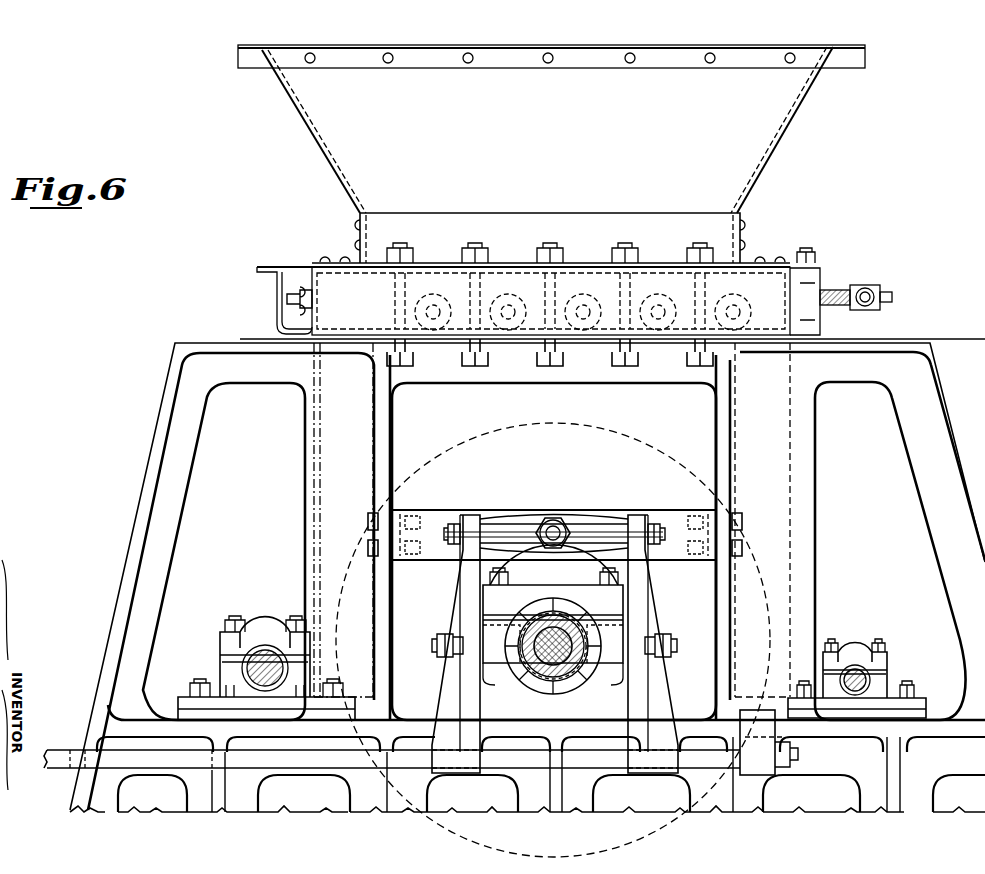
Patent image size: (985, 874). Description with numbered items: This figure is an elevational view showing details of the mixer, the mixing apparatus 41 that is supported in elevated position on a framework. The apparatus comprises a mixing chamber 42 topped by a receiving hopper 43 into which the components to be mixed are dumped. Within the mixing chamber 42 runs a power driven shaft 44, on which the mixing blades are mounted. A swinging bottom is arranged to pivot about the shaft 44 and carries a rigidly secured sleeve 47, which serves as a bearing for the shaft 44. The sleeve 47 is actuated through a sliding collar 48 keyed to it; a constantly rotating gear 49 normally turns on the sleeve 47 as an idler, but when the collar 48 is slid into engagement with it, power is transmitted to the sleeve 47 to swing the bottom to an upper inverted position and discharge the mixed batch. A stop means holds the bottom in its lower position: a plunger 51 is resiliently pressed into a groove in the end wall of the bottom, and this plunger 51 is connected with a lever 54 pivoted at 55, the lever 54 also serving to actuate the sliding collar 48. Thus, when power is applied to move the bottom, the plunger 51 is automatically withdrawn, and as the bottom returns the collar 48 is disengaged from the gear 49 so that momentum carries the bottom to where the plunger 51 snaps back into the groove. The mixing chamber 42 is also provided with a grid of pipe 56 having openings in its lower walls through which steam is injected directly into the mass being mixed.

The mixing apparatus 41 is at (946, 418).
The mixing chamber 42 is at (554, 551).
The receiving hopper 43 is at (789, 119).
The power driven shaft 44 is at (544, 676).
The sleeve 47 is at (576, 676).
The sliding collar 48 is at (531, 603).
The gear 49 is at (652, 436).
The plunger 51 is at (561, 521).
The lever 54 is at (643, 583).
The pivot 55 is at (802, 755).
The grid of pipe 56 is at (428, 299).